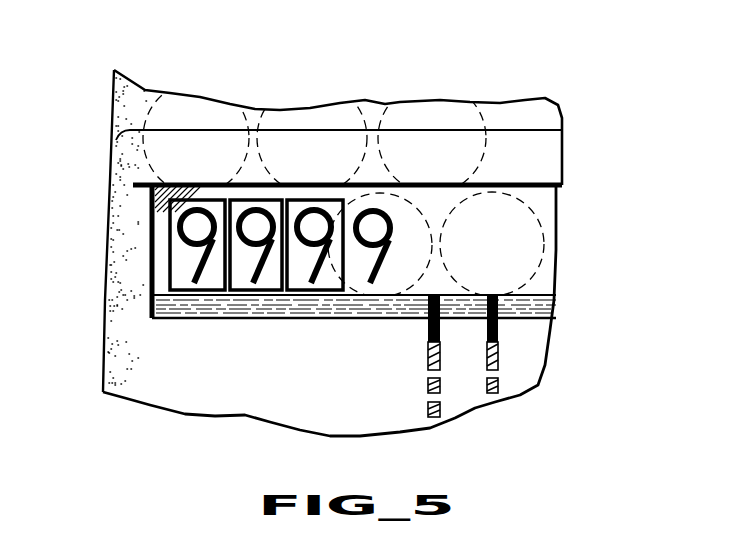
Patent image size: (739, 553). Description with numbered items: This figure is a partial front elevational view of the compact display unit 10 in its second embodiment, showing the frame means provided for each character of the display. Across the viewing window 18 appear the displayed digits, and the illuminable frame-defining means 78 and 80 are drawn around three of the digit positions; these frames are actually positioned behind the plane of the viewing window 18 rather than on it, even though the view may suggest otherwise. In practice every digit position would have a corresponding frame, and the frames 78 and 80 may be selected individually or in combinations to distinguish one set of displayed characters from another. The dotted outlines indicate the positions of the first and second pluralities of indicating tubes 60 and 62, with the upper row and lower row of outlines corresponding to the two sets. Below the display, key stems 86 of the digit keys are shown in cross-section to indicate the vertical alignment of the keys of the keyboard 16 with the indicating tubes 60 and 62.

The compact display unit 10 is at (237, 89).
The keyboard 16 is at (552, 405).
The viewing window 18 is at (542, 202).
The first plurality of indicating tubes 60 is at (487, 122).
The second plurality of indicating tubes 62 is at (530, 283).
The illuminable frame-defining means 78 is at (200, 291).
The illuminable frame-defining means 80 is at (259, 291).
The key stems 86 is at (492, 394).